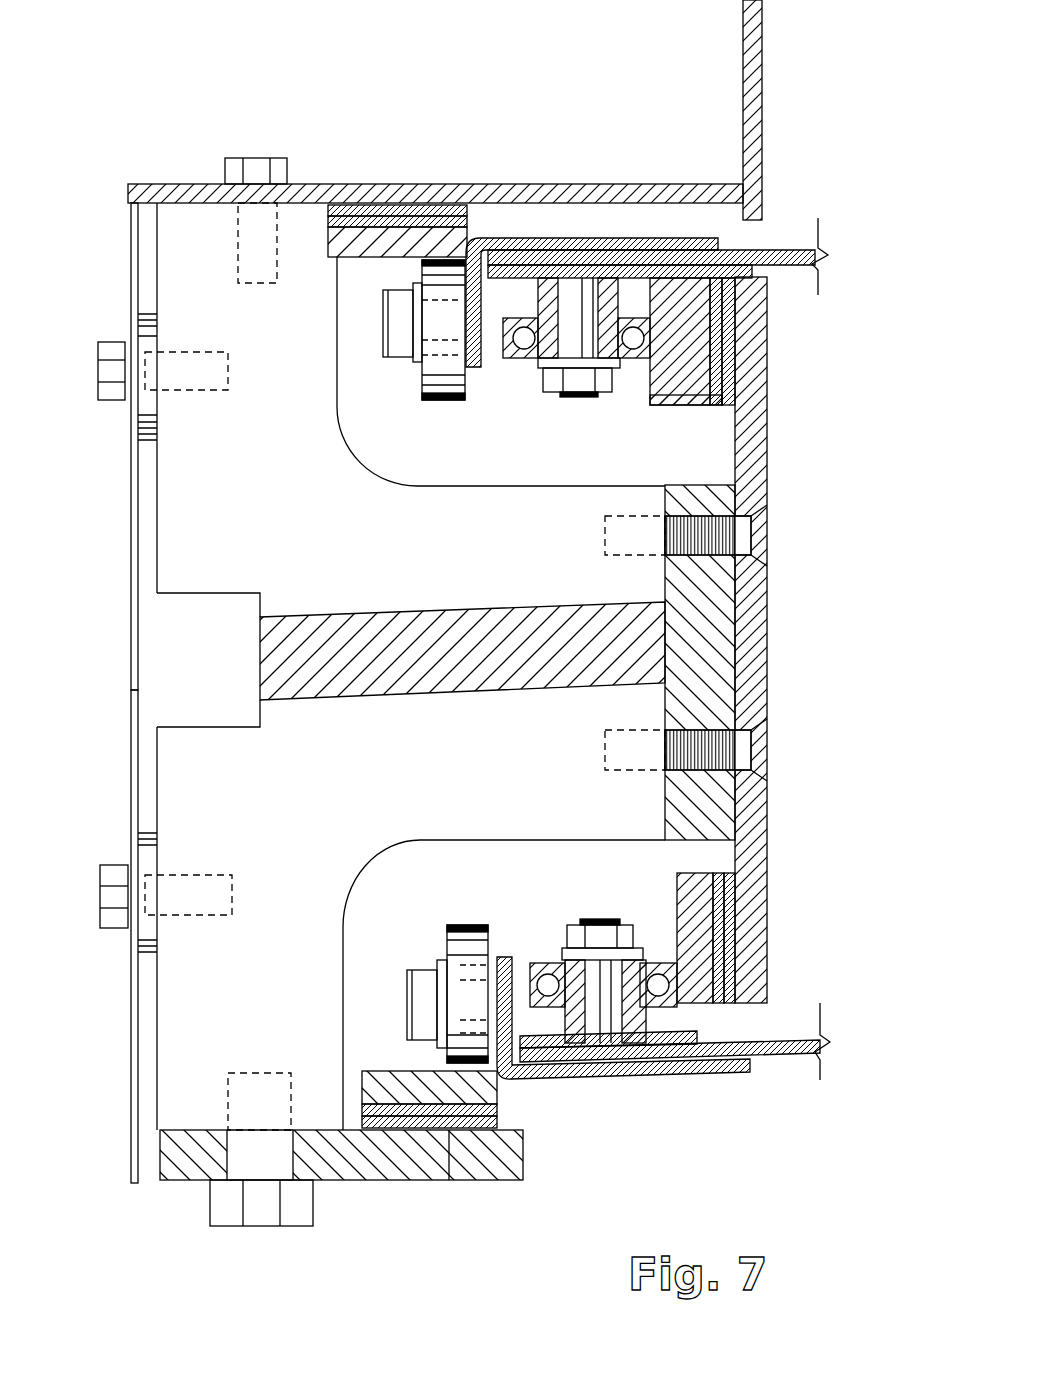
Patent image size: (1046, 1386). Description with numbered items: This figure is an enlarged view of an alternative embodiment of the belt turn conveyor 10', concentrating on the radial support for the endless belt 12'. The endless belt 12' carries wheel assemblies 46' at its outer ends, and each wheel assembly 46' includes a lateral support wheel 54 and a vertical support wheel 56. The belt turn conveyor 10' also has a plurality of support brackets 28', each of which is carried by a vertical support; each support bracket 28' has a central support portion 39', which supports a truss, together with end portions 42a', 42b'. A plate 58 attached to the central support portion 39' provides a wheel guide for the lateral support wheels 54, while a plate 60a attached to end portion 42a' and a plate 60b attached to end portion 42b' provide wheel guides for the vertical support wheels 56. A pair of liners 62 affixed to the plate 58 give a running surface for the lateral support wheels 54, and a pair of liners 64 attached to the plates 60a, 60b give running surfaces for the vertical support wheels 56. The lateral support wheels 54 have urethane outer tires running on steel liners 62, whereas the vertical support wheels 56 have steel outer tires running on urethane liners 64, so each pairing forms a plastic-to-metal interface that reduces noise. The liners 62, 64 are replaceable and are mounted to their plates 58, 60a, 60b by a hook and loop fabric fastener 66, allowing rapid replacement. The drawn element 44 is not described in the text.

The belt turn conveyor 10' is at (815, 110).
The endless belt 12' is at (683, 652).
The support bracket 28' is at (429, 718).
The central support portion 39' is at (719, 625).
The end portion 42a' is at (146, 446).
The end portion 42b' is at (151, 936).
The spacer block 44 is at (710, 392).
The wheel assembly 46' is at (608, 644).
The lateral support wheel 54 is at (552, 958).
The vertical support wheel 56 is at (430, 262).
The plate 58 is at (767, 512).
The plate 60a is at (200, 185).
The plate 60b is at (292, 1182).
The liner 62 is at (707, 333).
The liner 64 is at (425, 214).
The hook and loop fabric fastener 66 is at (348, 212).